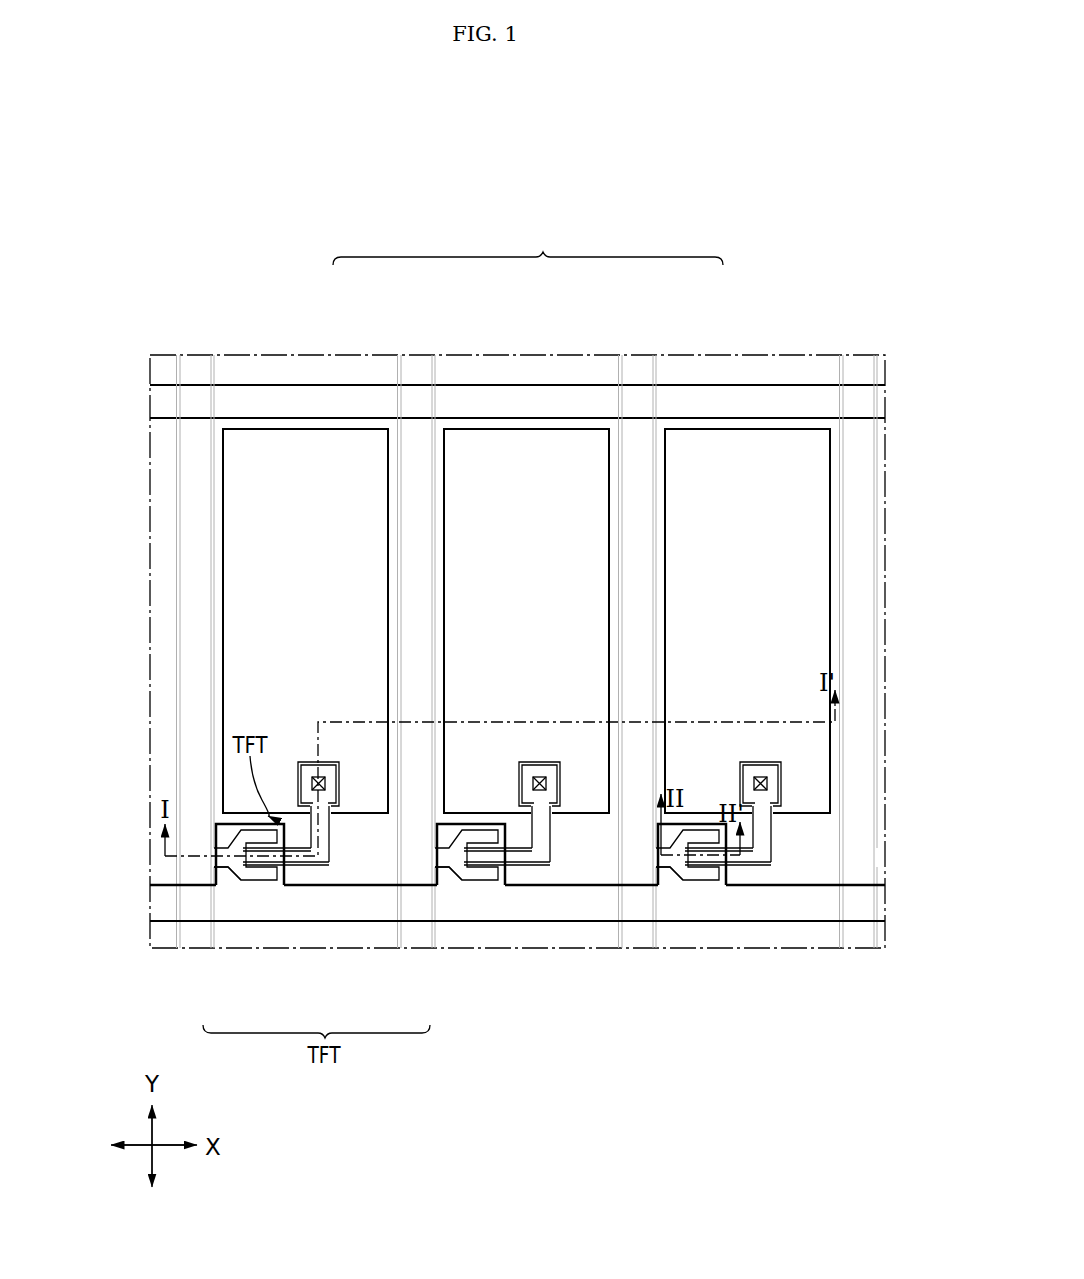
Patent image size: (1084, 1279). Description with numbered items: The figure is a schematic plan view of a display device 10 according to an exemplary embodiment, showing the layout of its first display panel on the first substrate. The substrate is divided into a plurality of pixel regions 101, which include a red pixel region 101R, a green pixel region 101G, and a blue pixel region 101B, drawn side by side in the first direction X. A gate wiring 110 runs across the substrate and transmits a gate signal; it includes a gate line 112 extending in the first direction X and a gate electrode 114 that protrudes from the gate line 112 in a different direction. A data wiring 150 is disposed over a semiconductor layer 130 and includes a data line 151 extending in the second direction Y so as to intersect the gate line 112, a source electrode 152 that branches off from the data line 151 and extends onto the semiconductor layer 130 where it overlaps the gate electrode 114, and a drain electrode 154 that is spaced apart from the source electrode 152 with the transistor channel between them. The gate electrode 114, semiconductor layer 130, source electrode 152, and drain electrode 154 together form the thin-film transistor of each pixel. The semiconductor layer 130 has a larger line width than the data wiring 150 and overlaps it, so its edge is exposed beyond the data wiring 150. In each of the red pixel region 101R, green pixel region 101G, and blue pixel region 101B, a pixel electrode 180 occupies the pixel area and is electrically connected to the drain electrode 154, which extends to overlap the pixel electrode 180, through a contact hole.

The display device 10 is at (830, 203).
The pixel regions 101 is at (481, 587).
The red pixel region 101R is at (299, 340).
The green pixel region 101G is at (542, 338).
The blue pixel region 101B is at (748, 340).
The gate wiring 110 is at (166, 924).
The gate line 112 is at (252, 912).
The gate electrode 114 is at (285, 871).
The semiconductor layer 130 is at (228, 874).
The data wiring 150 is at (172, 657).
The data line 151 is at (190, 690).
The source electrode 152 is at (262, 876).
The drain electrode 154 is at (272, 858).
The pixel electrode 180 is at (358, 428).